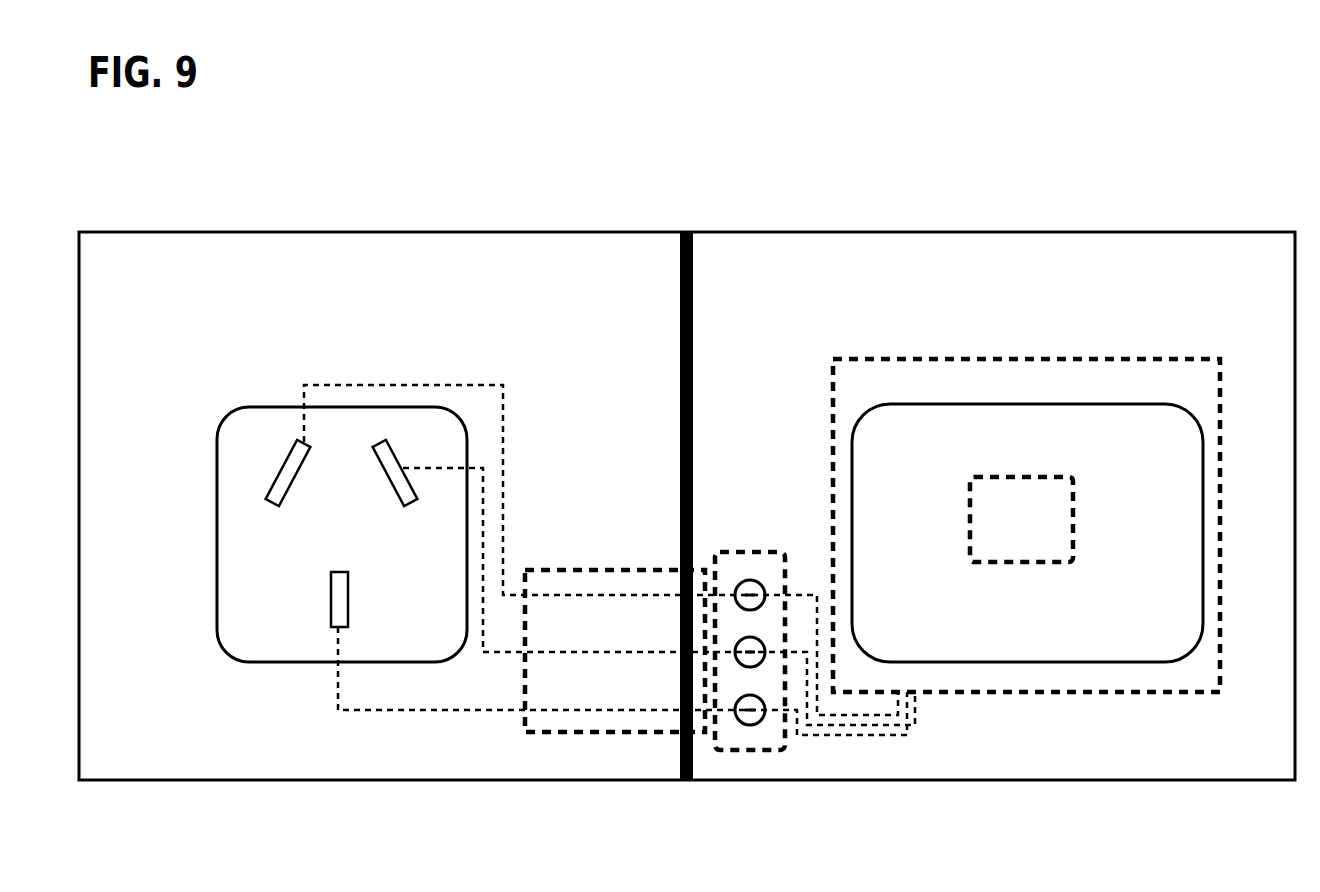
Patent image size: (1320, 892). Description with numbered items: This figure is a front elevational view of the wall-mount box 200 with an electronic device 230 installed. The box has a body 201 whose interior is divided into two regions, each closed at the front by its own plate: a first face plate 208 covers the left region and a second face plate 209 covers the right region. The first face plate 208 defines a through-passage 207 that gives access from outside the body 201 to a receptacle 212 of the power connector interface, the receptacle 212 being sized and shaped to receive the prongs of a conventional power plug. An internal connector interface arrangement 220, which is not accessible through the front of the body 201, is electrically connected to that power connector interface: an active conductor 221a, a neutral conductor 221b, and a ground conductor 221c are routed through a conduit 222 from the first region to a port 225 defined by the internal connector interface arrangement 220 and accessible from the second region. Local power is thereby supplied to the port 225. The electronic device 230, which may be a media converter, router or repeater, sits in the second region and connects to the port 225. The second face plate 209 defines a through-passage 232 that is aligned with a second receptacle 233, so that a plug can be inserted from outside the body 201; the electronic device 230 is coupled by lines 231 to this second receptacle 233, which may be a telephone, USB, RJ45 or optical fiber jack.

The wall-mount box 200 is at (1113, 222).
The body 201 is at (687, 474).
The through-passage 207 is at (293, 541).
The first face plate 208 is at (570, 292).
The second face plate 209 is at (742, 292).
The receptacle 212 is at (293, 478).
The internal connector interface arrangement 220 is at (778, 656).
The active conductor 221a is at (601, 524).
The neutral conductor 221b is at (657, 596).
The ground conductor 221c is at (608, 694).
The conduit 222 is at (615, 611).
The port 225 is at (788, 764).
The electronic device 230 is at (1026, 476).
The lines 231 is at (915, 735).
The through-passage 232 is at (1087, 392).
The second receptacle 233 is at (1021, 519).